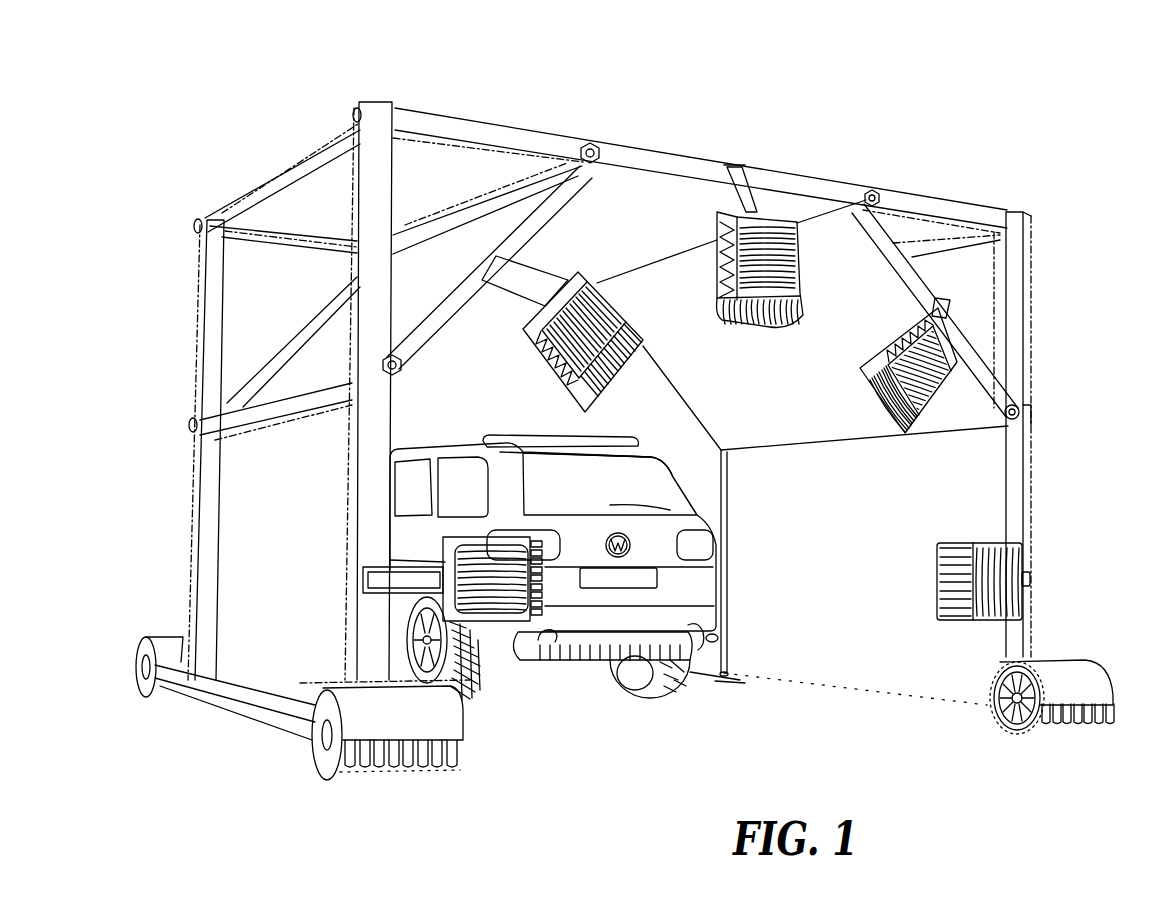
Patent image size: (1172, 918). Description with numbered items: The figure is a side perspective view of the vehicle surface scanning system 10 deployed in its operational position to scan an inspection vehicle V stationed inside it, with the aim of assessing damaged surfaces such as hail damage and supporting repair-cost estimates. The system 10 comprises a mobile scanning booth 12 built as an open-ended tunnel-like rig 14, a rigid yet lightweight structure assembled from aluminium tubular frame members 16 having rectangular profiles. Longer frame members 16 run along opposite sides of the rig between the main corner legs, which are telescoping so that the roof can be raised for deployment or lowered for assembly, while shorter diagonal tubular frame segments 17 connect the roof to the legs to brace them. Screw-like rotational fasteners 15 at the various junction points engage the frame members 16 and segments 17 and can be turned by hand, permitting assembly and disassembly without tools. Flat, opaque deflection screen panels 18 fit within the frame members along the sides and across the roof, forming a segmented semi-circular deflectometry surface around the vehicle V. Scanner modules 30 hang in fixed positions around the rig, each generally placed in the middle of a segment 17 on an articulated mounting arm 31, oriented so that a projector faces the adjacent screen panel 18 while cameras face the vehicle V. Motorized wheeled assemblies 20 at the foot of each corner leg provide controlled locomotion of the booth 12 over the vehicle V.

The vehicle surface scanning system 10 is at (797, 128).
The mobile scanning booth 12 is at (462, 116).
The tunnel-like rig 14 is at (930, 200).
The rotational fasteners 15 is at (592, 145).
The tubular frame members 16 is at (198, 297).
The tubular frame segments 17 is at (517, 228).
The deflection screen panels 18 is at (333, 323).
The wheeled assemblies 20 is at (1070, 657).
The scanner modules 30 is at (1020, 550).
The articulated mounting arm 31 is at (752, 165).
The inspection vehicle V is at (597, 665).